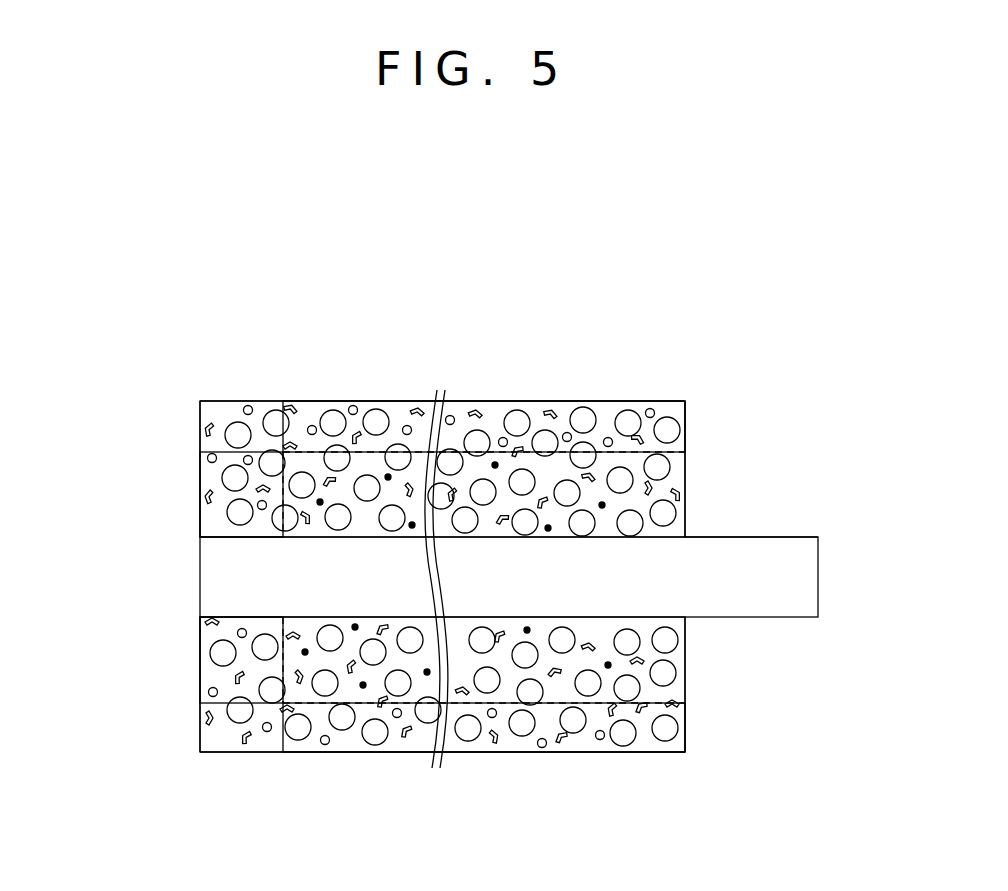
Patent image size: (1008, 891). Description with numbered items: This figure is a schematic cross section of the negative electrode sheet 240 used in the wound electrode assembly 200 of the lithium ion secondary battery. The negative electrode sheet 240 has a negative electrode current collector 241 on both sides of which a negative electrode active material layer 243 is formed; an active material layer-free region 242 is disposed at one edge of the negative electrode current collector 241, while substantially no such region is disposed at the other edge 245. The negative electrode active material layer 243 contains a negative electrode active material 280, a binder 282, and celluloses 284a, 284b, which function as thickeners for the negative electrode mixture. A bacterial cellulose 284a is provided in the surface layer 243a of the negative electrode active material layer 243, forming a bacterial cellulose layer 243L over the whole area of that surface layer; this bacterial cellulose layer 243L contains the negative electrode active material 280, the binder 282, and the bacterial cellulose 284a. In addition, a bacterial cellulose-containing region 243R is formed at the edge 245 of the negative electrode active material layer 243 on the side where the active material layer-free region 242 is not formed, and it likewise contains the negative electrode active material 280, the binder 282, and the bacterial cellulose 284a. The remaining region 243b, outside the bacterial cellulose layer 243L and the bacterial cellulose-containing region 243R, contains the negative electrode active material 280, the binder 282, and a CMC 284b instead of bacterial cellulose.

The wound electrode assembly 200 is at (722, 246).
The negative electrode sheet 240 is at (716, 348).
The negative electrode current collector 241 is at (802, 619).
The active material layer-free region 242 is at (788, 537).
The negative electrode active material layer 243 is at (512, 395).
The surface layer 243a is at (221, 400).
The CMC-containing region 243b is at (685, 512).
The bacterial cellulose layer 243L is at (697, 402).
The bacterial cellulose-containing region 243R is at (283, 538).
The edge 245 is at (199, 437).
The negative electrode active material 280 is at (378, 408).
The binder 282 is at (557, 405).
The bacterial cellulose 284a is at (247, 404).
The CMC 284b is at (495, 465).